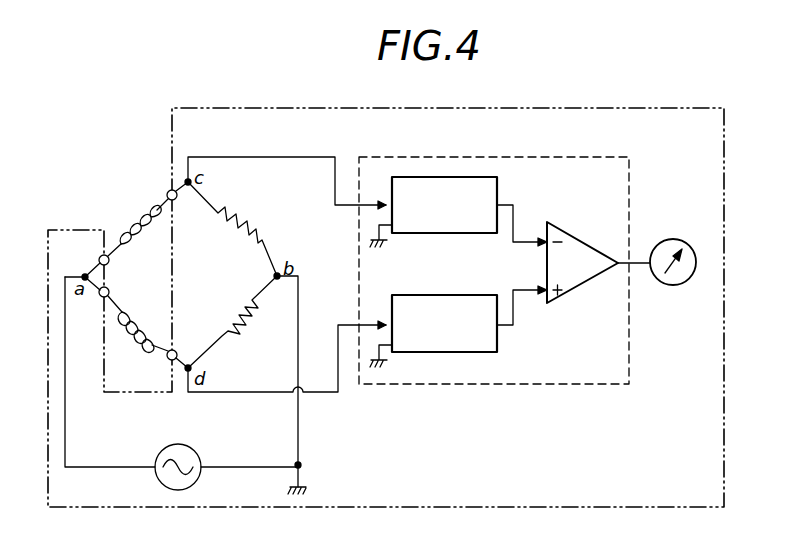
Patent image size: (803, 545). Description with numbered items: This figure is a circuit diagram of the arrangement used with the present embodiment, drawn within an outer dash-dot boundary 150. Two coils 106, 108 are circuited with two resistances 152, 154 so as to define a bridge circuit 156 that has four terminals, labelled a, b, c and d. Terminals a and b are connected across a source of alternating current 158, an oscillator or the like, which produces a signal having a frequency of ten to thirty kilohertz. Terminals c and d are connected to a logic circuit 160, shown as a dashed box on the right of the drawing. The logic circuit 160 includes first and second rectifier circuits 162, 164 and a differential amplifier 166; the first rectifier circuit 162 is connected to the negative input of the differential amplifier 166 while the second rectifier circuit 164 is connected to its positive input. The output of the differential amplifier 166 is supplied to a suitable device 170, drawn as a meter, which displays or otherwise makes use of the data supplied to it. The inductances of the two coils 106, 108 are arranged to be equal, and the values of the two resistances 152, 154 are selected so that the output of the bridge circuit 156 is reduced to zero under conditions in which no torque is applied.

The housing / shielded enclosure 150 is at (201, 108).
The bridge circuit 156 is at (155, 178).
The coil 106 is at (137, 226).
The coil 108 is at (136, 332).
The resistance 152 is at (238, 228).
The resistance 154 is at (236, 326).
The source of alternating current 158 is at (195, 445).
The logic circuit 160 is at (493, 386).
The first rectifier circuit 162 is at (435, 225).
The second rectifier circuit 164 is at (471, 310).
The differential amplifier 166 is at (586, 250).
The device 170 is at (677, 240).